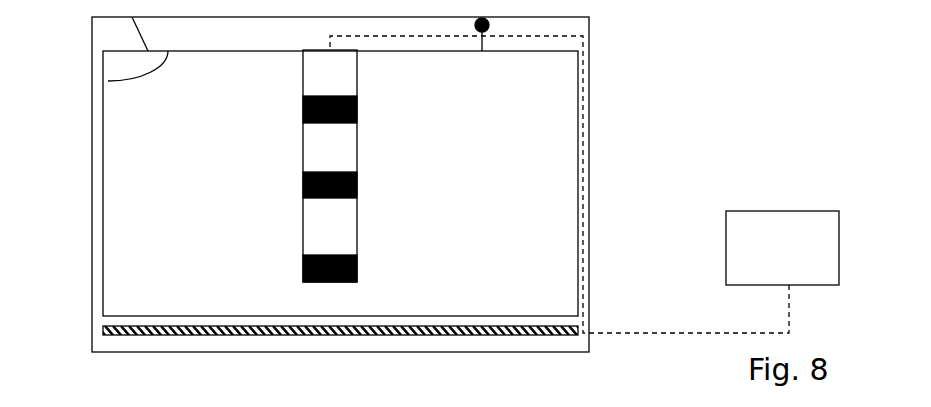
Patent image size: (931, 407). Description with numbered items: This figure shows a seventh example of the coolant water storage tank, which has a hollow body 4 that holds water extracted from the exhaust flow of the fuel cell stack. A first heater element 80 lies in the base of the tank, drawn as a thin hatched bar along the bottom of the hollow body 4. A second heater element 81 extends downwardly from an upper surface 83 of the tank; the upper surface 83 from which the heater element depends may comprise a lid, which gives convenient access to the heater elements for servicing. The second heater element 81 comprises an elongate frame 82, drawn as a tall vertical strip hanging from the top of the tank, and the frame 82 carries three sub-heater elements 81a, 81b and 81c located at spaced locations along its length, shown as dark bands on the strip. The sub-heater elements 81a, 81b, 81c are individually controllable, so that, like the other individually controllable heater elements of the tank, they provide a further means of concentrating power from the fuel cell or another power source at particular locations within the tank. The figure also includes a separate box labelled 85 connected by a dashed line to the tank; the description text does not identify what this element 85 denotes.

The hollow body 4 is at (578, 229).
The first heater element 80 is at (143, 335).
The second heater element 81 is at (327, 174).
The sub-heater element 81a is at (303, 112).
The sub-heater element 81b is at (303, 188).
The sub-heater element 81c is at (303, 268).
The elongate frame 82 is at (357, 225).
The upper surface 83 is at (108, 81).
The control unit 85 is at (761, 270).